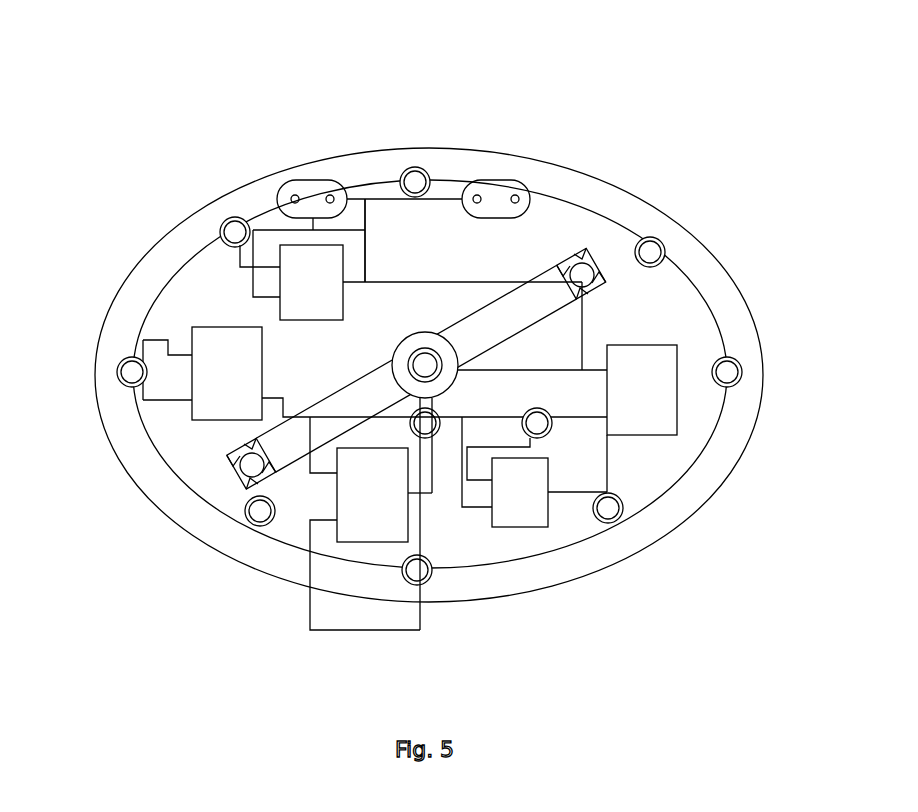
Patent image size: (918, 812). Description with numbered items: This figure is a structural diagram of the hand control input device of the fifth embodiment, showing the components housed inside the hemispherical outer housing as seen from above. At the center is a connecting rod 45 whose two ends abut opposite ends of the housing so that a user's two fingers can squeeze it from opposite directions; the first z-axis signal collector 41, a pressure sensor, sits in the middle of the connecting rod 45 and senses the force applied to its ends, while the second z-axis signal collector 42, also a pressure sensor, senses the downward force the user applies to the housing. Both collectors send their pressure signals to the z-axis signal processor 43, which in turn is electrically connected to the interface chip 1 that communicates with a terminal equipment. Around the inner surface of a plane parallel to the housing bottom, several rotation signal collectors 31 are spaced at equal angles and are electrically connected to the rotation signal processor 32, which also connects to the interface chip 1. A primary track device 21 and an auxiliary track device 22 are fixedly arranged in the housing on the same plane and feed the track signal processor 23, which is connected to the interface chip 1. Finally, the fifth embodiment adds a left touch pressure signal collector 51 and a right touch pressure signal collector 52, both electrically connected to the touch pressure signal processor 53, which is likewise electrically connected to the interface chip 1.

The interface chip 1 is at (675, 387).
The primary track device 21 is at (433, 437).
The auxiliary track device 22 is at (553, 430).
The track signal processor 23 is at (533, 527).
The rotation signal collector 31 is at (123, 357).
The rotation signal processor 32 is at (200, 421).
The first z-axis signal collector 41 is at (436, 324).
The second z-axis signal collector 42 is at (445, 333).
The z-axis signal processor 43 is at (337, 520).
The connecting rod 45 is at (373, 390).
The left touch pressure signal collector 51 is at (310, 193).
The right touch pressure signal collector 52 is at (493, 190).
The touch pressure signal processor 53 is at (278, 244).